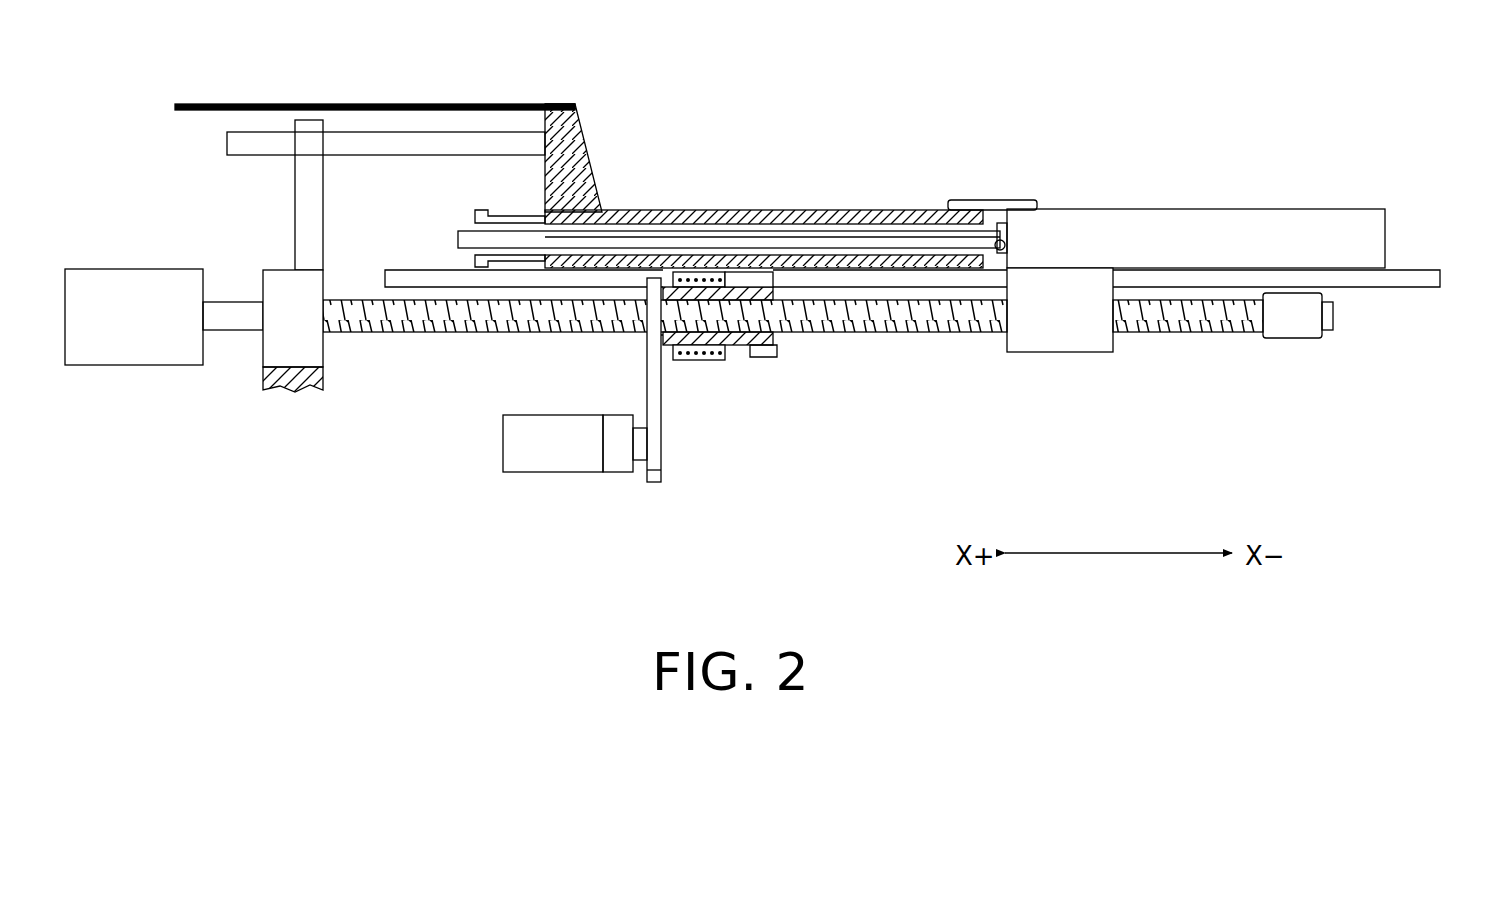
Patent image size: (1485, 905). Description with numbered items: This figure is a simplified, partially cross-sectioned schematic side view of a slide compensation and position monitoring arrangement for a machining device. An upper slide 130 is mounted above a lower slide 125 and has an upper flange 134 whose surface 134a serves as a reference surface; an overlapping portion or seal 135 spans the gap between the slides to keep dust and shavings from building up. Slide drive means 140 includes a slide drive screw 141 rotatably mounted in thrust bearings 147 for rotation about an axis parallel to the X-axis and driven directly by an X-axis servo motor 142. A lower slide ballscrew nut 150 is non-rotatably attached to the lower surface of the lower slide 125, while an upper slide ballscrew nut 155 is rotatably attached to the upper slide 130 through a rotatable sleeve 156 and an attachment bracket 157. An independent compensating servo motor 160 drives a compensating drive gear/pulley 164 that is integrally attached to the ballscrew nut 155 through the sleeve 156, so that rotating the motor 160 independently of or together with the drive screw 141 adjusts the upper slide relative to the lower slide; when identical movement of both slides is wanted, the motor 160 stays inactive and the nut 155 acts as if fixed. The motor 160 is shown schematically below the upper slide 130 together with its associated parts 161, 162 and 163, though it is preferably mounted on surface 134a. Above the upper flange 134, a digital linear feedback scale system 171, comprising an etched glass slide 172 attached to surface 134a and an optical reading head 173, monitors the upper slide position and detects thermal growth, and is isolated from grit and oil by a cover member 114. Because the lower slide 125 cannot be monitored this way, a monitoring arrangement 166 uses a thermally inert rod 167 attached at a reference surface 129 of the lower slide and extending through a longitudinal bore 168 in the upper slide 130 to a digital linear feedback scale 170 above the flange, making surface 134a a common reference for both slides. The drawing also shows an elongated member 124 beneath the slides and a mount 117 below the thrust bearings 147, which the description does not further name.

The cover member 114 is at (207, 103).
The digital linear feedback scale system 171 is at (352, 116).
The etched glass slide 172 is at (412, 146).
The optical reading head 173 is at (300, 195).
The upper flange 134 is at (588, 146).
The reference surface 134a is at (542, 114).
The digital linear feedback scale 170 is at (523, 210).
The monitoring arrangement 166 is at (456, 222).
The upper slide 130 is at (683, 212).
The longitudinal bore 168 is at (836, 240).
The thermally inert rod 167 is at (990, 240).
The reference surface 129 is at (1006, 250).
The overlapping portion or seal 135 is at (1045, 205).
The lower slide 125 is at (1215, 212).
The base plate 124 is at (1398, 272).
The lower slide ballscrew nut 150 is at (1050, 345).
The slide drive screw 141 is at (518, 332).
The attachment bracket 157 is at (700, 272).
The upper slide ballscrew nut 155 is at (768, 352).
The rotatable sleeve 156 is at (702, 354).
The compensating drive gear/pulley 164 is at (655, 336).
The carrier plate 163 is at (655, 392).
The independent compensating servo motor 160 is at (520, 446).
The gear head 161 is at (622, 466).
The motor shaft 162 is at (661, 470).
The X-axis servo motor 142 is at (128, 278).
The slide drive means 140 is at (237, 368).
The thrust bearings 147 is at (310, 350).
The base mount 117 is at (265, 390).